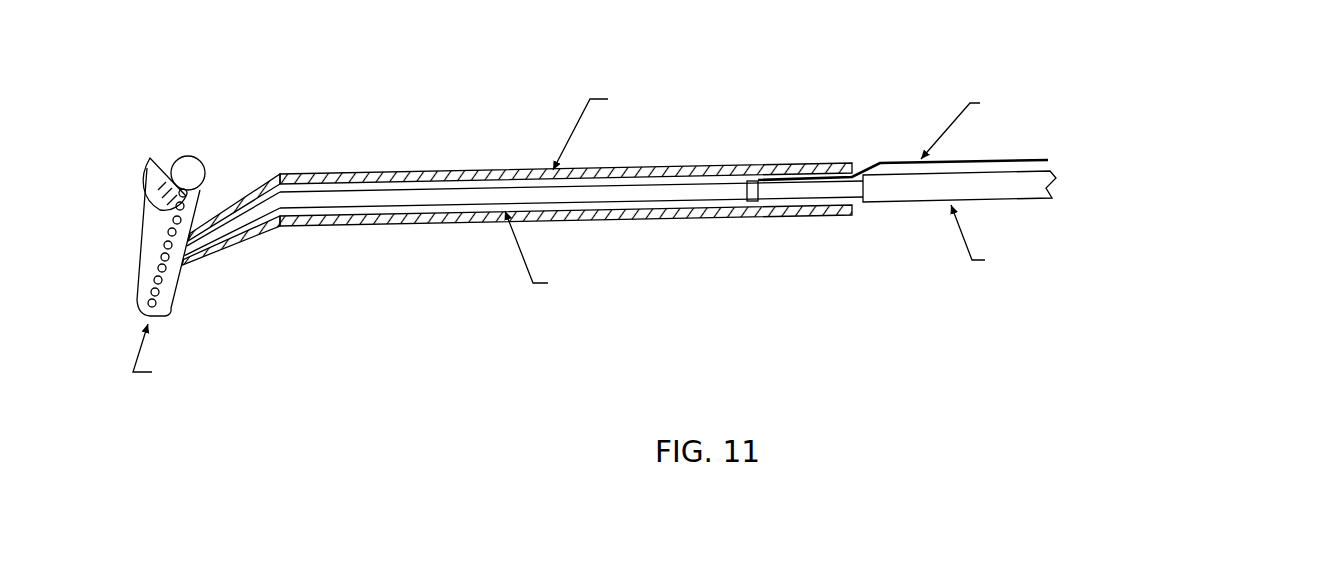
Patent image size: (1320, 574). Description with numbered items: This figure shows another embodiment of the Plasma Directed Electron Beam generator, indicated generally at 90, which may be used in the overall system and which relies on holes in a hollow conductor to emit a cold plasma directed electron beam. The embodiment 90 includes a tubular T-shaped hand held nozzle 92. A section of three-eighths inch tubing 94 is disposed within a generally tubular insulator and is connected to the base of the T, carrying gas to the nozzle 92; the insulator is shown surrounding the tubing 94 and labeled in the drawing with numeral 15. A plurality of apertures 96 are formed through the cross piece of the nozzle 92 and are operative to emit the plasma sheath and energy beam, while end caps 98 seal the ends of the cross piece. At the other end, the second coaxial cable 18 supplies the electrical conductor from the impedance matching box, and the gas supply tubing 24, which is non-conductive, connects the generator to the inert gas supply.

The PDEB generator embodiment 90 is at (757, 70).
The tubular T-shaped hand held nozzle 92 is at (224, 178).
The tubing 94 is at (368, 173).
The apertures 96 is at (152, 164).
The end caps 98 is at (191, 158).
The insulator 15 is at (656, 168).
The second coaxial cable 18 is at (1018, 158).
The gas supply tubing 24 is at (1024, 198).